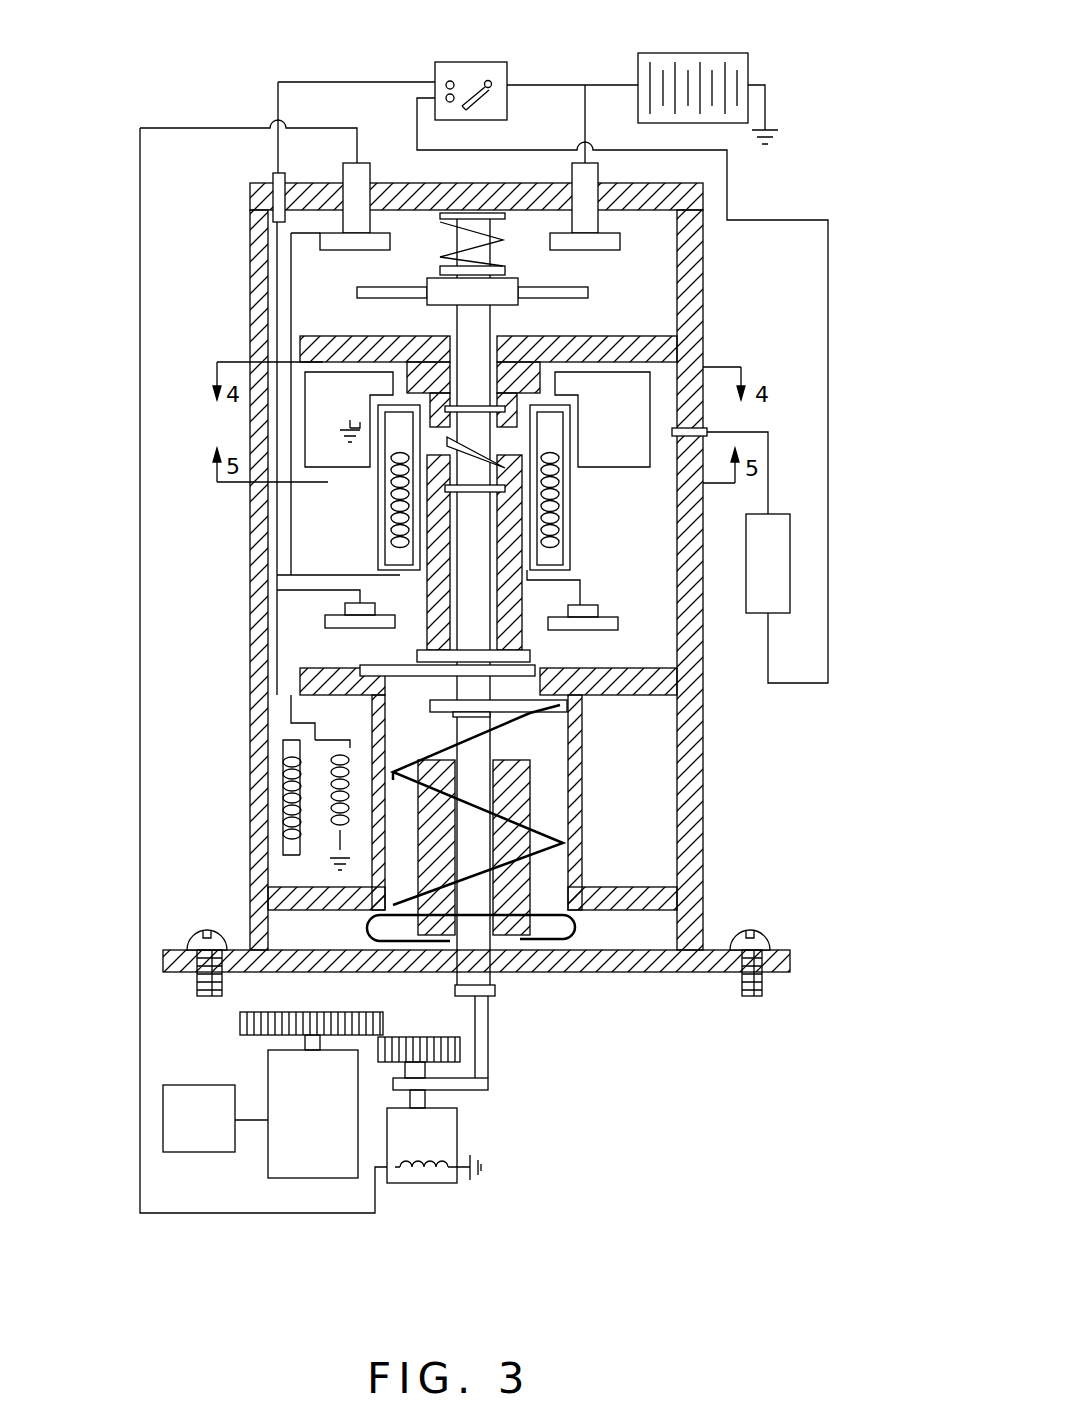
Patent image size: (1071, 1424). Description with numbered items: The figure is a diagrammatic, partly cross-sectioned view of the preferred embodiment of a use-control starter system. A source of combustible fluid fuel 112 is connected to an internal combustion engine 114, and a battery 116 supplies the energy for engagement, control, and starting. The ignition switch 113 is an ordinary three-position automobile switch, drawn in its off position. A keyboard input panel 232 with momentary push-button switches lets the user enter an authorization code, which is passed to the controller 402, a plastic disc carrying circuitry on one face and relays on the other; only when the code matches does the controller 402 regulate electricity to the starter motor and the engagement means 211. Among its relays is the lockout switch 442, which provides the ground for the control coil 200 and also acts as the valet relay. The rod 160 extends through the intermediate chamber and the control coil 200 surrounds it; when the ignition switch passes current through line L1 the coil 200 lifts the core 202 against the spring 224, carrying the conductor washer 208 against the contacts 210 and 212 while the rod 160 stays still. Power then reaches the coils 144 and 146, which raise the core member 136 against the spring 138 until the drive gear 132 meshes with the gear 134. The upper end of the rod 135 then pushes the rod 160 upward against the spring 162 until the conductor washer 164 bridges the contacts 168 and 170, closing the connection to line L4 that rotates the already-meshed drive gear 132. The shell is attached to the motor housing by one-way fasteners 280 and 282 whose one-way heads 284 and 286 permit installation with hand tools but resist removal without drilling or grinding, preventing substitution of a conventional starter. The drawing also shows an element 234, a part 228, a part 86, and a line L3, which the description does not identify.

The ignition switch 113 is at (458, 62).
The battery 116 is at (683, 53).
The contact 168 is at (377, 240).
The contact 170 is at (565, 238).
The spring 162 is at (432, 230).
The conductor washer 164 is at (585, 290).
The rod 160 is at (478, 332).
The housing 234 is at (703, 332).
The controller 402 is at (708, 361).
The lockout switch 442 is at (320, 430).
The terminal 228 is at (507, 413).
The spring 224 is at (507, 462).
The core 202 is at (515, 515).
The control coil 200 is at (380, 503).
The keyboard input panel 232 is at (772, 555).
The contact 210 is at (597, 622).
The contact 212 is at (362, 618).
The conductor washer 208 is at (580, 666).
The coil 146 is at (283, 755).
The coil 144 is at (330, 825).
The spring 138 is at (527, 713).
The rod 135 is at (478, 770).
The core member 136 is at (512, 892).
The spring 86 is at (583, 938).
The one-way head 284 is at (193, 940).
The one-way fastener 280 is at (200, 988).
The one-way head 286 is at (762, 940).
The one-way fastener 282 is at (766, 985).
The gear 134 is at (315, 1015).
The drive gear 132 is at (450, 1048).
The engagement means 211 is at (396, 1022).
The internal combustion engine 114 is at (290, 1088).
The source of combustible fluid fuel 112 is at (177, 1098).
The line L1 is at (290, 82).
The line L3 is at (830, 367).
The line L4 is at (136, 427).